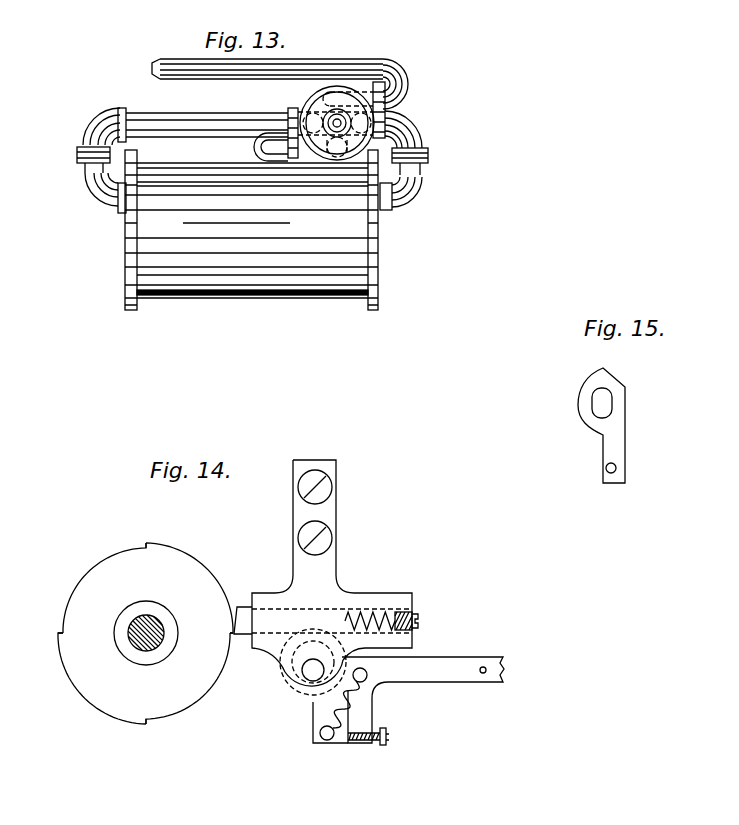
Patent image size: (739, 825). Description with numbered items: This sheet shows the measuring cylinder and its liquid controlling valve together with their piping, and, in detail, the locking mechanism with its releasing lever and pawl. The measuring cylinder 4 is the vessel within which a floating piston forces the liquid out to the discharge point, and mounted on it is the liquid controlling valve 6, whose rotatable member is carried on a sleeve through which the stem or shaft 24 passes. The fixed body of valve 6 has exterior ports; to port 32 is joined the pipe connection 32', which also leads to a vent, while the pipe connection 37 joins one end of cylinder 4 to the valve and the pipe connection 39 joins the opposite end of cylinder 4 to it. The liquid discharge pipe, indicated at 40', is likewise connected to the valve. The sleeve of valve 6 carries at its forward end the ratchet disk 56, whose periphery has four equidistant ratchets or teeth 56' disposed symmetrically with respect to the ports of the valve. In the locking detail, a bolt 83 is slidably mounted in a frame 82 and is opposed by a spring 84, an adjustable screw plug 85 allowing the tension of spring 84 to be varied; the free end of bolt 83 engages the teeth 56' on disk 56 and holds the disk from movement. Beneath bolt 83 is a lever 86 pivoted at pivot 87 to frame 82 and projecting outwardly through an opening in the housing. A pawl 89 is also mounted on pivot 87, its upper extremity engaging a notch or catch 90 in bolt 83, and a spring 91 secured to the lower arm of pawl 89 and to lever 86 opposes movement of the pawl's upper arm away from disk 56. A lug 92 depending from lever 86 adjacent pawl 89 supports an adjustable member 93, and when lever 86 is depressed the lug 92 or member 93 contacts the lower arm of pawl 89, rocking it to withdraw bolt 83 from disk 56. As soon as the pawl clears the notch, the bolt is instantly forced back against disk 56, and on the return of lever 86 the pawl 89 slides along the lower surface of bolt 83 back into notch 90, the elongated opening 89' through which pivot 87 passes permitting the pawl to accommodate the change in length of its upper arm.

In FIG. 13, the measuring cylinder 4 is at (251, 230).
In FIG. 13, the liquid controlling valve 6 is at (305, 102).
In FIG. 14, the stem or shaft 24 is at (136, 650).
In FIG. 13, the exterior port 32 is at (206, 158).
In FIG. 13, the pipe connection 32' is at (244, 147).
In FIG. 13, the pipe connection 37 is at (82, 133).
In FIG. 13, the pipe connection 39 is at (420, 139).
In FIG. 13, the pipe 40' is at (280, 84).
In FIG. 14, the ratchet disk 56 is at (145, 633).
In FIG. 14, the ratchets or teeth 56' is at (142, 636).
In FIG. 14, the frame 82 is at (332, 573).
In FIG. 14, the bolt 83 is at (243, 607).
In FIG. 14, the spring 84 is at (382, 620).
In FIG. 14, the adjustable screw plug 85 is at (420, 631).
In FIG. 14, the lever 86 is at (423, 700).
In FIG. 14, the pivot 87 is at (311, 674).
In FIG. 14, the pawl 89 is at (303, 722).
In FIG. 15, the pawl 89 is at (621, 425).
In FIG. 14, the elongated opening 89' is at (267, 682).
In FIG. 15, the elongated opening 89' is at (634, 403).
In FIG. 14, the notch or catch 90 is at (308, 648).
In FIG. 14, the spring 91 is at (332, 741).
In FIG. 14, the lug 92 is at (370, 708).
In FIG. 14, the adjustable member 93 is at (388, 740).